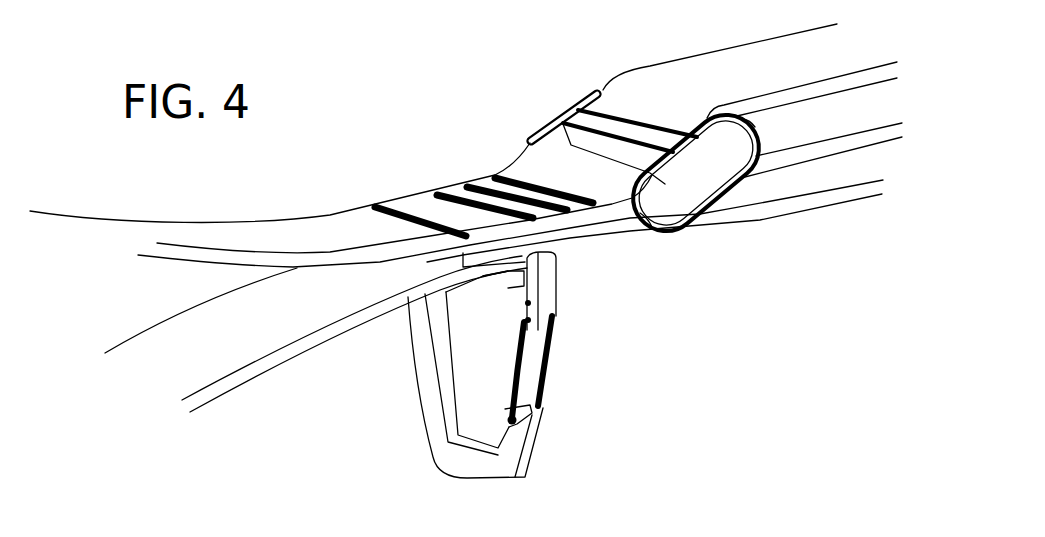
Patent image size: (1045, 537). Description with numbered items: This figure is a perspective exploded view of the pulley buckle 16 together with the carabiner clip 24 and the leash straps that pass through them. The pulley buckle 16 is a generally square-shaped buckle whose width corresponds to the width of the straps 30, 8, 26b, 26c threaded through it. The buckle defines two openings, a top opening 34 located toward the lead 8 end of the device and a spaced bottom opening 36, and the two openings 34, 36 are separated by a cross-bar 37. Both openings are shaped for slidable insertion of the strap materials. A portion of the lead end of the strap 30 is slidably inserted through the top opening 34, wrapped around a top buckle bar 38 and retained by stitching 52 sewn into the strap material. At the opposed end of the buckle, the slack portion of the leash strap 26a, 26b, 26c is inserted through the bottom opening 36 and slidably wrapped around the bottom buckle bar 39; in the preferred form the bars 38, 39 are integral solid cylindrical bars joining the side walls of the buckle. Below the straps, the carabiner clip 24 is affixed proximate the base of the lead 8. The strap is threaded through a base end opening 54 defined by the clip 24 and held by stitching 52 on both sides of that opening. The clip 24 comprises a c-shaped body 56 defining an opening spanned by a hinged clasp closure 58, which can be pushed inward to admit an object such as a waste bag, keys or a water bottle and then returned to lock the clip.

The lead 8 is at (347, 244).
The pulley buckle 16 is at (710, 189).
The carabiner clip 24 is at (592, 397).
The leash strap 26a is at (860, 180).
The leash strap 26b is at (860, 125).
The leash strap 26c is at (860, 65).
The strap 30 is at (562, 243).
The top opening 34 is at (612, 153).
The bottom opening 36 is at (619, 112).
The cross-bar 37 is at (567, 118).
The top buckle bar 38 is at (657, 228).
The bottom buckle bar 39 is at (756, 123).
The stitching 52 is at (378, 206).
The base end opening 54 is at (502, 281).
The c-shaped body 56 is at (452, 460).
The clasp closure 58 is at (554, 349).